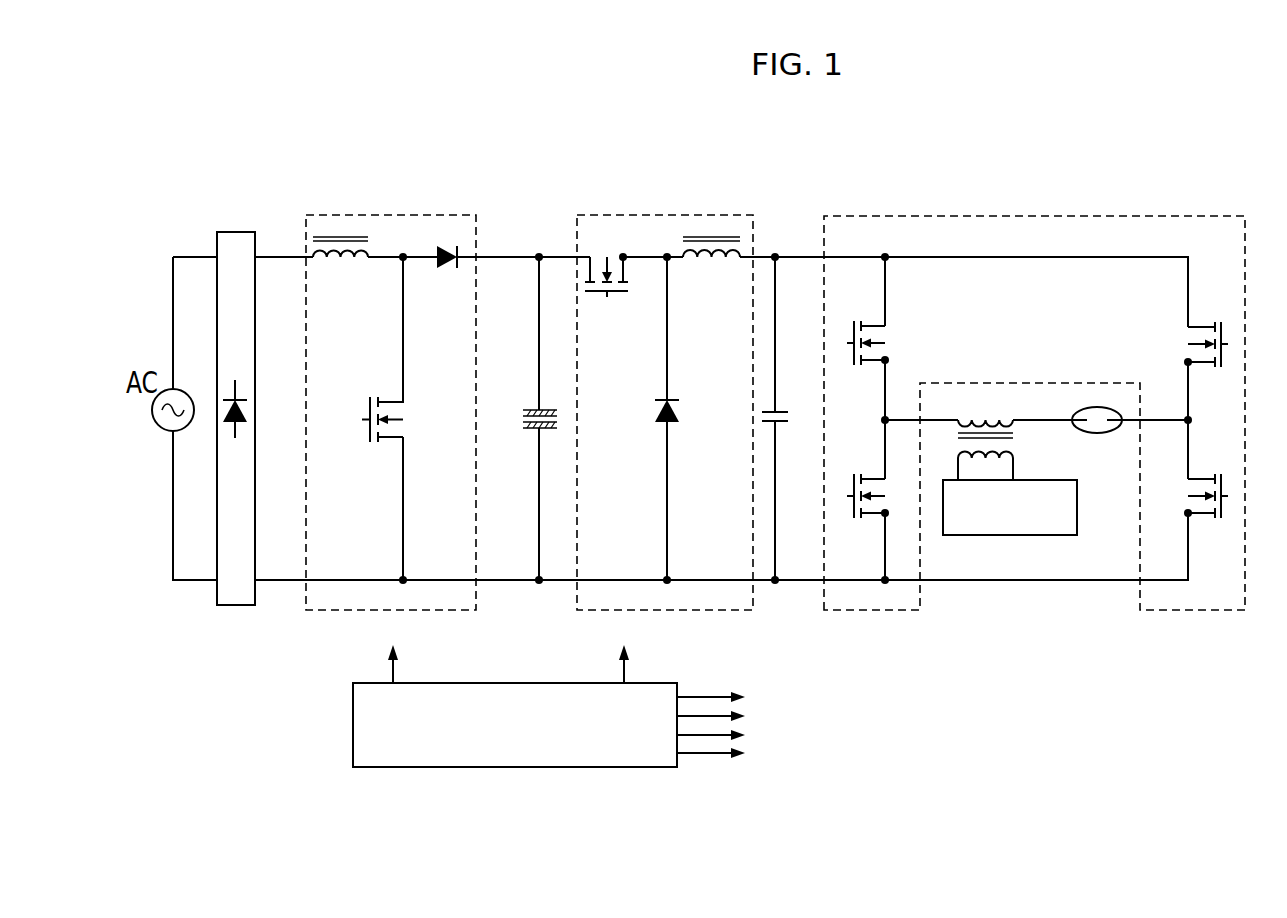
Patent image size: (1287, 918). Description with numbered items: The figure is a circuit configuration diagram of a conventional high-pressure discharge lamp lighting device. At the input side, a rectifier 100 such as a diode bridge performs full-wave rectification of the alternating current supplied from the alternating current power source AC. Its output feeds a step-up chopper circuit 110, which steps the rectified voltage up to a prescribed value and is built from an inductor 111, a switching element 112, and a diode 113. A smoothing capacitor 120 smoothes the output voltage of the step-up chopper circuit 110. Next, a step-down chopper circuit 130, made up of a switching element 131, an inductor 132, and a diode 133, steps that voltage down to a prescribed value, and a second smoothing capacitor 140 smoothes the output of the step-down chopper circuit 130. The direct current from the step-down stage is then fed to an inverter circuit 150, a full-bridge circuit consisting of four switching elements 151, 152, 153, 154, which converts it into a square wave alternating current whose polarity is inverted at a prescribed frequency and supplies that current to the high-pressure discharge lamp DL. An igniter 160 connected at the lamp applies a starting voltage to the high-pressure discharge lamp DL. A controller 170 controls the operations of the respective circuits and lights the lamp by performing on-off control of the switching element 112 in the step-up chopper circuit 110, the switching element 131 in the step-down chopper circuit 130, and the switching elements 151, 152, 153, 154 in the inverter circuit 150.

The rectifier 100 is at (240, 243).
The step-up chopper circuit 110 is at (390, 215).
The inductor 111 is at (340, 266).
The switching element 112 is at (374, 418).
The diode 113 is at (442, 275).
The smoothing capacitor 120 is at (522, 418).
The step-down chopper circuit 130 is at (650, 212).
The switching element 131 is at (605, 292).
The inductor 132 is at (711, 267).
The diode 133 is at (646, 418).
The smoothing capacitor 140 is at (792, 418).
The inverter circuit 150 is at (1025, 215).
The switching element 151 is at (858, 323).
The switching element 152 is at (860, 478).
The switching element 153 is at (1214, 327).
The switching element 154 is at (1214, 479).
The igniter 160 is at (1023, 535).
The controller 170 is at (408, 767).